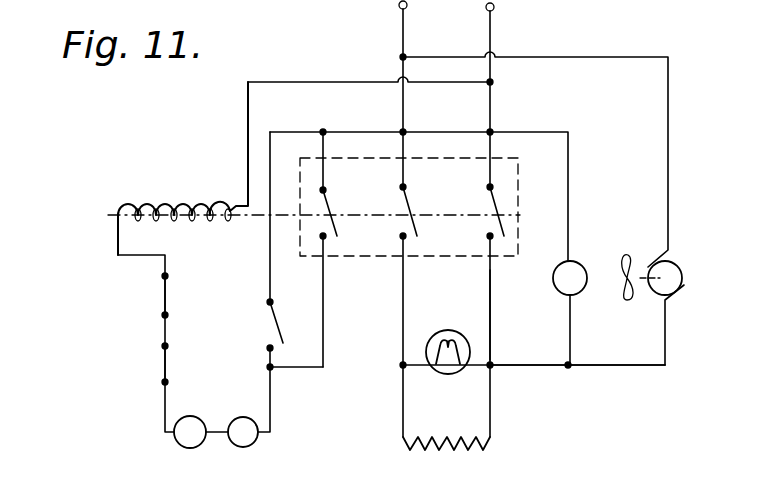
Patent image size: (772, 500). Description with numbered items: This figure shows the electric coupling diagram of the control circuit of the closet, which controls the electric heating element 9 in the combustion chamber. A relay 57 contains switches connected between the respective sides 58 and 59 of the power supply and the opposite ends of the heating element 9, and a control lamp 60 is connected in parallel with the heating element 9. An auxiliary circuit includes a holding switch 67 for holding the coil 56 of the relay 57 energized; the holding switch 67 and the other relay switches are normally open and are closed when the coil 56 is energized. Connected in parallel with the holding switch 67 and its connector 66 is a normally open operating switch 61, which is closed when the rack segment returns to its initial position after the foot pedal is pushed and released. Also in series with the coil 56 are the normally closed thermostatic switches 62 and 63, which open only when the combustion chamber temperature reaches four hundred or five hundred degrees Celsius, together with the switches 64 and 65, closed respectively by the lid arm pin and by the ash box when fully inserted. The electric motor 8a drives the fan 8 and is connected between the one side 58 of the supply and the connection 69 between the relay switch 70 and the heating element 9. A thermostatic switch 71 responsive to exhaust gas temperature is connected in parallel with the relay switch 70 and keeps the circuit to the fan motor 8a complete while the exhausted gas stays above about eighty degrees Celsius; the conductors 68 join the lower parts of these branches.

The fan 8 is at (679, 262).
The electric motor 8a is at (620, 298).
The electric heating element 9 is at (447, 452).
The coil 56 is at (180, 205).
The relay 57 is at (360, 262).
The side of power supply 58 is at (398, 9).
The side of power supply 59 is at (494, 10).
The control lamp 60 is at (446, 375).
The operating switch 61 is at (275, 322).
The thermostatic switch 62 is at (253, 445).
The thermostatic switch 63 is at (180, 446).
The switch 64 is at (163, 366).
The switch 65 is at (163, 294).
The connector 66 is at (323, 321).
The holding switch 67 is at (331, 205).
The conductor 68 is at (542, 367).
The connection 69 is at (492, 318).
The relay switch 70 is at (496, 205).
The thermostatic switch 71 is at (577, 272).